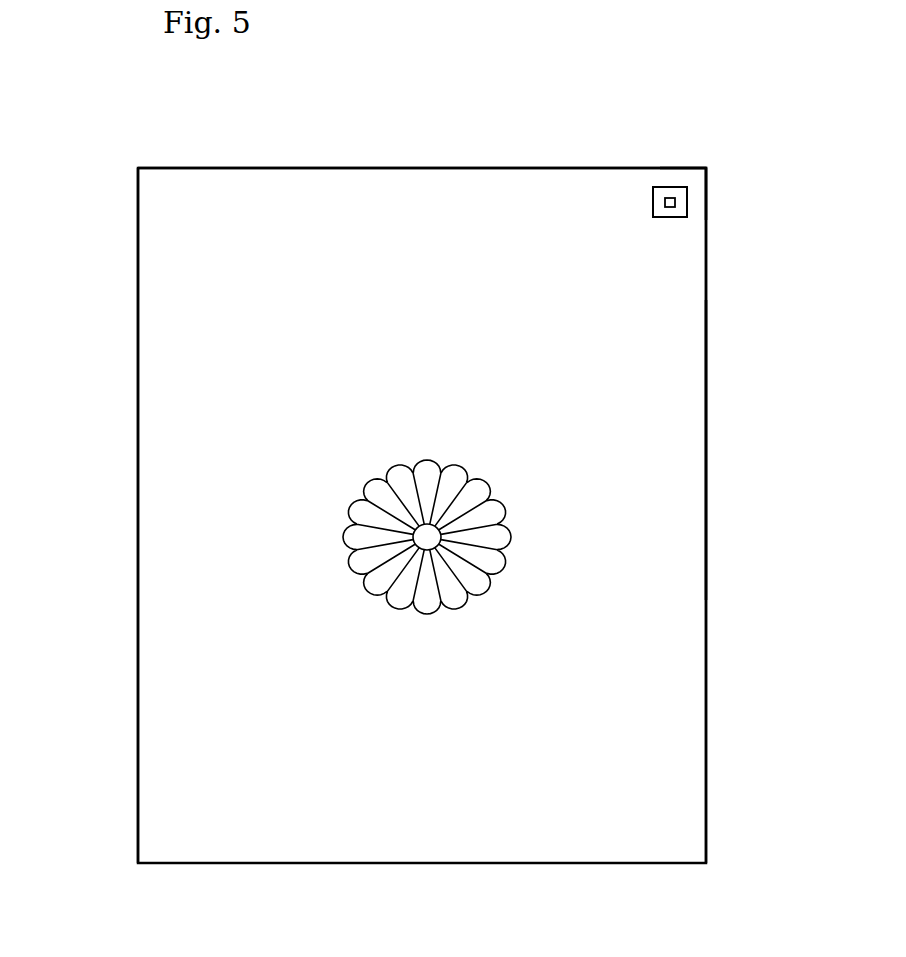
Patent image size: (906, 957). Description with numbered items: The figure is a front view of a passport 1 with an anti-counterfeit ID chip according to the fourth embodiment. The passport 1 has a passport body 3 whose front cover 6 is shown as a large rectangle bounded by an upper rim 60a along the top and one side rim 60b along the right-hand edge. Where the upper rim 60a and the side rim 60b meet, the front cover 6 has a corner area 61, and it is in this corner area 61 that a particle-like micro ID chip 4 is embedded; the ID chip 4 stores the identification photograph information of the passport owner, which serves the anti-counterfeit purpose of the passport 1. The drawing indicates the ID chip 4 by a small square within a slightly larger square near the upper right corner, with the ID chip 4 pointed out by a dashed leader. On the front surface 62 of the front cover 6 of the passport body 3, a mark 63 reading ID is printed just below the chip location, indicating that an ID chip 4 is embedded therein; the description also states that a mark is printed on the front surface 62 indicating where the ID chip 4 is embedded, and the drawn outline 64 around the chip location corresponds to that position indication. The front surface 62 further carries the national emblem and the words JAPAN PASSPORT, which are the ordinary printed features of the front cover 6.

The passport 1 is at (100, 184).
The passport body 3 is at (128, 554).
The ID chip 4 is at (675, 203).
The front cover 6 is at (692, 433).
The upper rim 60a is at (418, 167).
The side rim 60b is at (707, 520).
The corner area 61 is at (695, 180).
The front surface 62 is at (627, 668).
The mark 63 is at (675, 237).
The IC module 64 is at (668, 187).